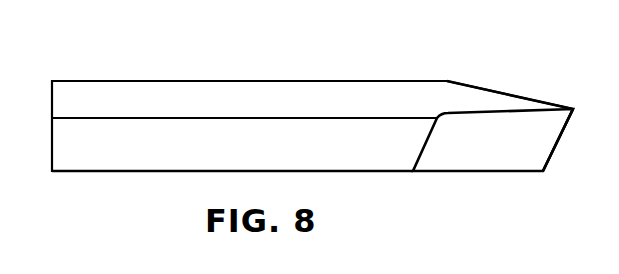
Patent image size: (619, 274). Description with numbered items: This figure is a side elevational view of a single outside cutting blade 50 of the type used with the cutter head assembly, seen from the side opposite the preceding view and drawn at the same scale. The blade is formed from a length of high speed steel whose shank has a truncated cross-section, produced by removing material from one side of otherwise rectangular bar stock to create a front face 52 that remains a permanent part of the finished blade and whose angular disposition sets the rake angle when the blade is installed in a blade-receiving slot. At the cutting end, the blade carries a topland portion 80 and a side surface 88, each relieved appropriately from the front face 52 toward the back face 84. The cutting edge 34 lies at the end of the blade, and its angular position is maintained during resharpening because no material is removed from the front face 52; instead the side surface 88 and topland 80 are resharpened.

The outside cutting blade 50 is at (130, 73).
The front face 52 is at (327, 90).
The cutting edge 34 is at (508, 93).
The side surface 88 is at (513, 152).
The topland portion 80 is at (562, 145).
The back face 84 is at (267, 168).